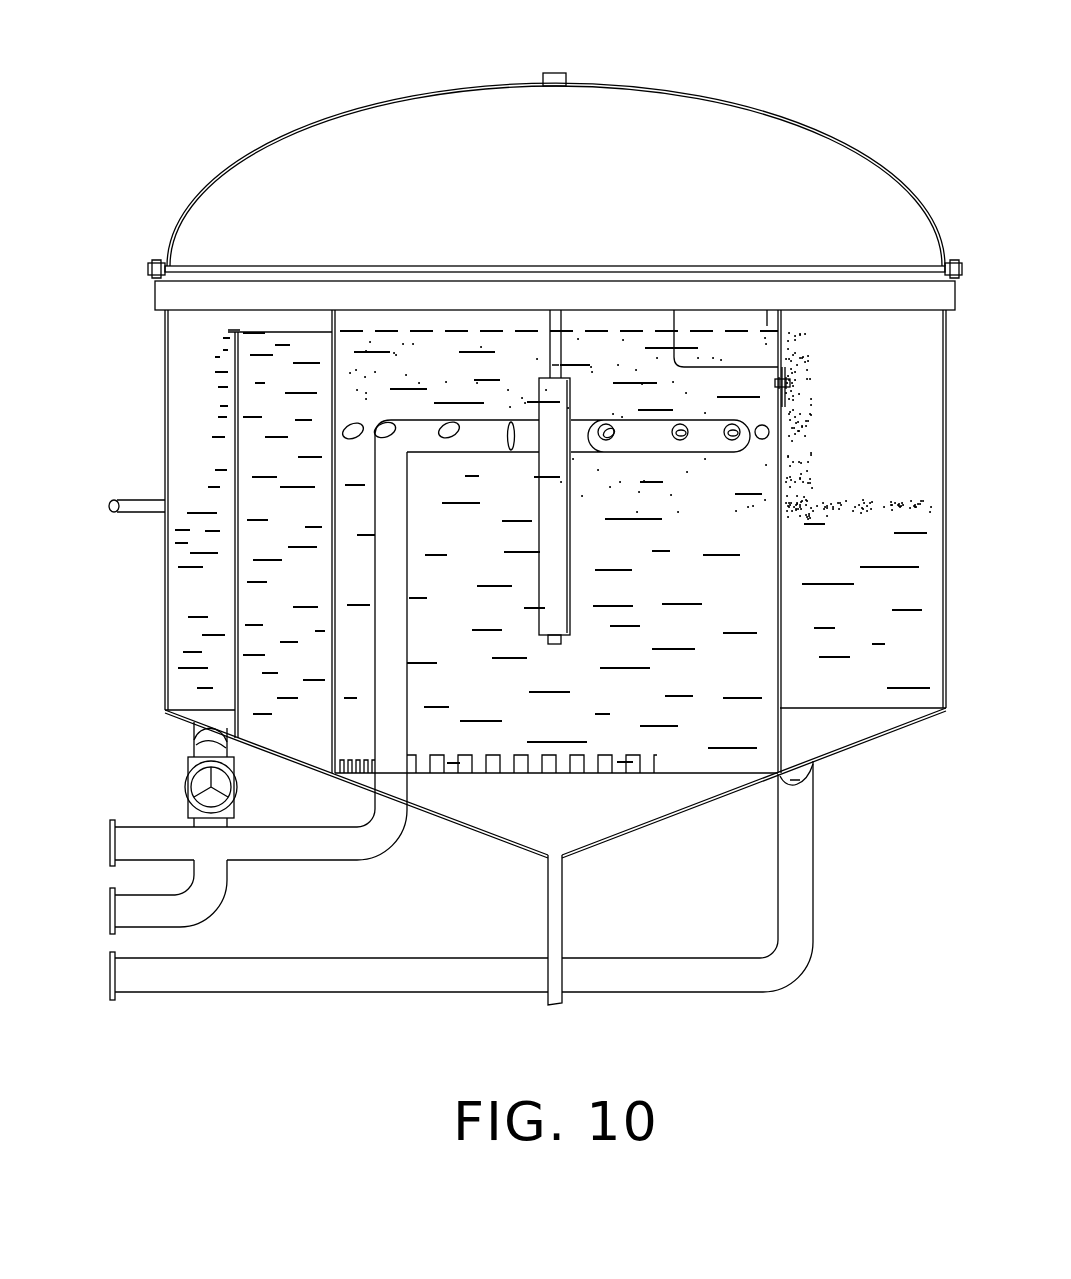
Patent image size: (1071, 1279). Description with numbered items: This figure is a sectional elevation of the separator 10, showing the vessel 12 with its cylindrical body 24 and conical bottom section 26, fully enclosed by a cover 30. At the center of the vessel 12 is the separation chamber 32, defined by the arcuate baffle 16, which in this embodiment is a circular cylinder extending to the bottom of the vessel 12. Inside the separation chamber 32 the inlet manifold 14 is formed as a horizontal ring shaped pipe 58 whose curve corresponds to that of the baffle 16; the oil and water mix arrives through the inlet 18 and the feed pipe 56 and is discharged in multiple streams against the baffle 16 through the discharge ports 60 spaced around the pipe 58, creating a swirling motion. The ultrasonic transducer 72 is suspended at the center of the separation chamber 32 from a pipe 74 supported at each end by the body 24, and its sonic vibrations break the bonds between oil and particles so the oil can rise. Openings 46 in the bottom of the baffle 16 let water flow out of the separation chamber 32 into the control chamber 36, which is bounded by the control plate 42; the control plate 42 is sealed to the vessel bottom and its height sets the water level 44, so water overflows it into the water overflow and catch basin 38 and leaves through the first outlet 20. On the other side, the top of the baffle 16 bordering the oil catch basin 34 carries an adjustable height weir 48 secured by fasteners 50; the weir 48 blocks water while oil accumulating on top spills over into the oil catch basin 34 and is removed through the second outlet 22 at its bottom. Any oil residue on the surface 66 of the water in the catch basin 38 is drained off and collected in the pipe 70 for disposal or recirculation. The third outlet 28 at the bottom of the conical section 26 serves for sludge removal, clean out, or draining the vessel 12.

The separator 10 is at (214, 40).
The vessel 12 is at (152, 352).
The inlet manifold 14 is at (618, 456).
The arcuate baffle 16 is at (332, 588).
The inlet 18 is at (148, 818).
The first outlet 20 is at (222, 890).
The second outlet 22 is at (814, 830).
The cylindrical body 24 is at (946, 690).
The conical bottom section 26 is at (634, 826).
The third outlet 28 is at (548, 905).
The cover 30 is at (750, 108).
The separation chamber 32 is at (656, 590).
The oil catch basin 34 is at (846, 560).
The control chamber 36 is at (276, 516).
The water overflow and catch basin 38 is at (189, 602).
The control plate 42 is at (239, 460).
The water level 44 is at (270, 332).
The openings 46 is at (580, 775).
The adjustable height weir 48 is at (783, 330).
The fasteners 50 is at (790, 383).
The feed pipe 56 is at (408, 532).
The ring shaped pipe 58 is at (510, 450).
The discharge ports 60 is at (447, 440).
The surface 66 is at (196, 498).
The pipe 70 is at (147, 513).
The transducer 72 is at (571, 548).
The pipe 74 is at (555, 294).